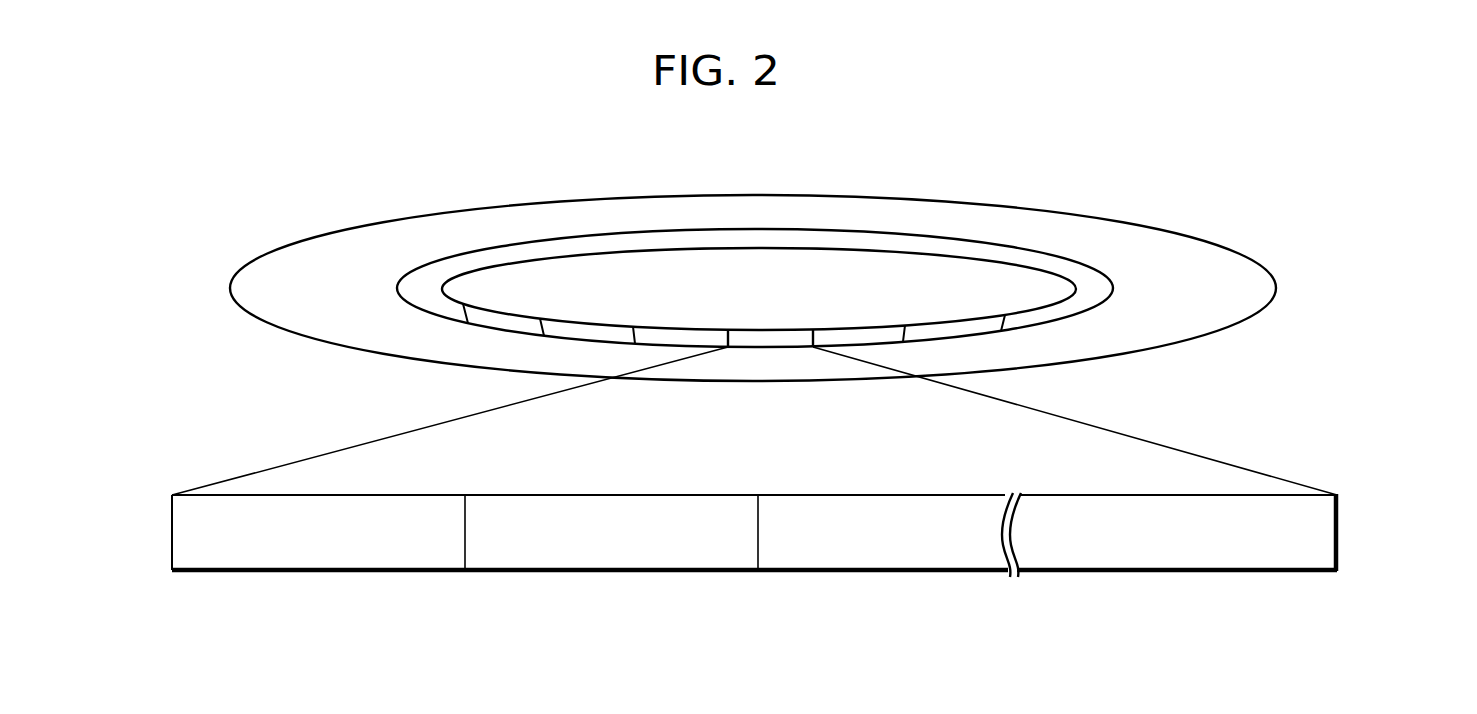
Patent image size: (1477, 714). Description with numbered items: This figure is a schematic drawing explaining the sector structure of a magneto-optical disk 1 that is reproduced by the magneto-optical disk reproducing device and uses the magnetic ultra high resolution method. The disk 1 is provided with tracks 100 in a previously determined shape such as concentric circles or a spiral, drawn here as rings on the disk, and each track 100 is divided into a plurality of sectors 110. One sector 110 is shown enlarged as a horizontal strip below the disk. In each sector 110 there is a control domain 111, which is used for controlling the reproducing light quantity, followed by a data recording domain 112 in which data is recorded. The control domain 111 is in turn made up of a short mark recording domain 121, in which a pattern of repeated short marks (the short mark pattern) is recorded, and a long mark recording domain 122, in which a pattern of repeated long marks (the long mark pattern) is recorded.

The magneto-optical disk 1 is at (1130, 228).
The track 100 is at (1116, 286).
The sector 110 is at (785, 331).
The control domain 111 is at (754, 550).
The data recording domain 112 is at (865, 572).
The short mark recording domain 121 is at (371, 496).
The long mark recording domain 122 is at (617, 515).